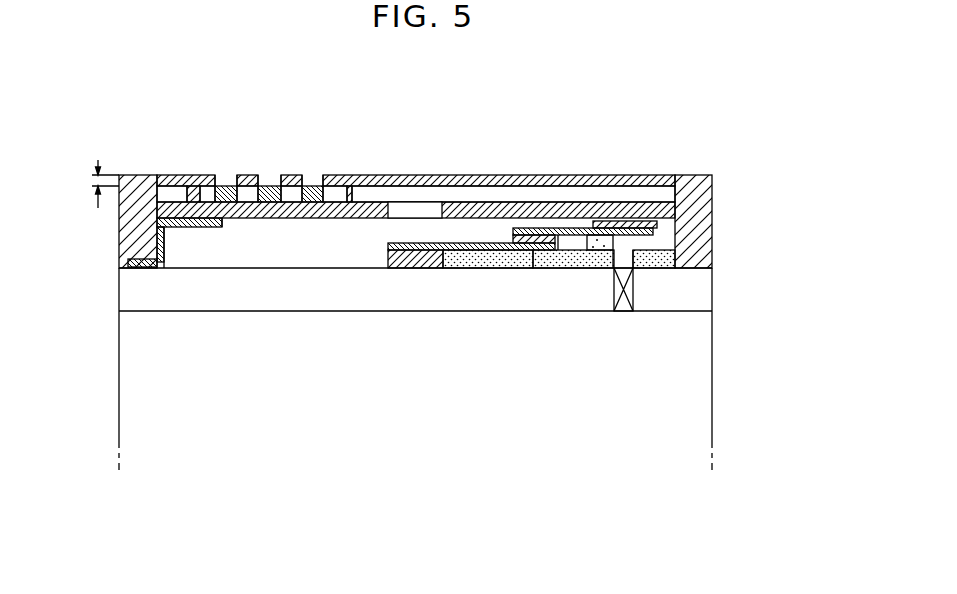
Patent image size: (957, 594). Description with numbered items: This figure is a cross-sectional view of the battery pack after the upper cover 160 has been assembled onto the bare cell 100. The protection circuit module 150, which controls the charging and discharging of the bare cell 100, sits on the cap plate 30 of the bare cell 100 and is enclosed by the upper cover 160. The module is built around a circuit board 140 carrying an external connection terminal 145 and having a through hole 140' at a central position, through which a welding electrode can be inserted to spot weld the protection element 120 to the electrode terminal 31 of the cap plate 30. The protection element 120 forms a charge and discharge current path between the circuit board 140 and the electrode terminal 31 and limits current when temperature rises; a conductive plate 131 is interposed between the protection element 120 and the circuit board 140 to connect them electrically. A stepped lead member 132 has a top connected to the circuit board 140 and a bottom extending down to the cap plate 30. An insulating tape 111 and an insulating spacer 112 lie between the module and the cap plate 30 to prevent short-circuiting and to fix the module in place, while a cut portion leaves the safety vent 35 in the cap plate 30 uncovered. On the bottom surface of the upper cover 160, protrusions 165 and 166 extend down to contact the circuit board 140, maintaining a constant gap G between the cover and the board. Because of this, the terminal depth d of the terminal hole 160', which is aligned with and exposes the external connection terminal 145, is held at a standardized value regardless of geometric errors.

The bare cell 100 is at (717, 359).
The cap plate 30 is at (697, 287).
The safety vent 35 is at (623, 290).
The electrode terminal 31 is at (415, 258).
The insulating tape 111 is at (475, 250).
The insulating spacer 112 is at (598, 243).
The protection element 120 is at (533, 250).
The conductive plate 131 is at (660, 227).
The lead member 132 is at (160, 247).
The circuit board 140 is at (416, 158).
The through hole 140' is at (415, 157).
The external connection terminal 145 is at (272, 186).
The protection circuit module 150 is at (717, 255).
The upper cover 160 is at (416, 149).
The terminal hole 160' is at (261, 141).
The protrusion 165 is at (193, 183).
The protrusion 166 is at (345, 195).
The gap G is at (373, 195).
The terminal depth d is at (95, 184).